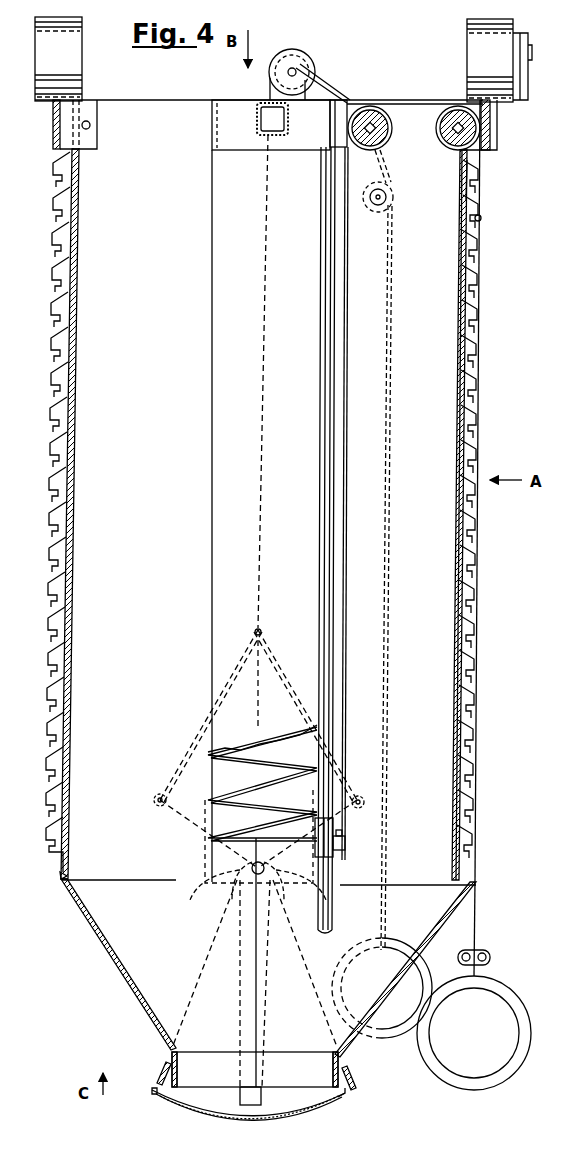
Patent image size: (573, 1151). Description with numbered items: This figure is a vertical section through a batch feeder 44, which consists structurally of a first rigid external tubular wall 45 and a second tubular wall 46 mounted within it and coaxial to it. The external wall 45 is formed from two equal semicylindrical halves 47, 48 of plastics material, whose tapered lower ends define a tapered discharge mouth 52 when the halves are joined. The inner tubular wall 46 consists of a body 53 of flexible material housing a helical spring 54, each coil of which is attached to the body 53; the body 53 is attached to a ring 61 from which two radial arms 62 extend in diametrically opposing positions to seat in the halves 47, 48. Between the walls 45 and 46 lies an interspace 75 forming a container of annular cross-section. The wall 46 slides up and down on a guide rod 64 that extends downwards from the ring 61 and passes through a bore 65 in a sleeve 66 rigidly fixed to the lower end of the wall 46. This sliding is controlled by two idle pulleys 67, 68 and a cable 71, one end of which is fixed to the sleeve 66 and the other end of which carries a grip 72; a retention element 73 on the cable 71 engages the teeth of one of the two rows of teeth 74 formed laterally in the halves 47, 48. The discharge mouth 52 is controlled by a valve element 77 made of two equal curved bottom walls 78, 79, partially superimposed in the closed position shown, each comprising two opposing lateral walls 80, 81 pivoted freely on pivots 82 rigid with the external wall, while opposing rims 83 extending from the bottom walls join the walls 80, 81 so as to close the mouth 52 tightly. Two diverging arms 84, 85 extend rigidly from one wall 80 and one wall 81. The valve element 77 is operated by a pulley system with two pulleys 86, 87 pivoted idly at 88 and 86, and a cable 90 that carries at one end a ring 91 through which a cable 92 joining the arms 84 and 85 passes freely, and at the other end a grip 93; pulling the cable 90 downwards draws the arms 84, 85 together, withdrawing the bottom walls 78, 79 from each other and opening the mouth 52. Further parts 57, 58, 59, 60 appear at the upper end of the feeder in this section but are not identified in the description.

The batch feeder 44 is at (490, 318).
The first rigid external tubular wall 45 is at (464, 624).
The second tubular wall 46 is at (210, 612).
The semicylindrical half 47 is at (455, 706).
The semicylindrical half 48 is at (70, 650).
The tapered discharge mouth 52 is at (286, 1074).
The body of flexible material 53 is at (212, 553).
The helical spring 54 is at (222, 774).
The cylinder 57 is at (80, 61).
The mounting block 58 is at (53, 128).
The pin hole 59 is at (90, 126).
The tube 60 is at (84, 148).
The ring 61 is at (238, 151).
The radial arms 62 is at (288, 125).
The guide rod 64 is at (329, 580).
The bore 65 is at (331, 860).
The sleeve 66 is at (333, 855).
The pulley 67 is at (376, 149).
The pulley 68 is at (441, 150).
The cable 71 is at (345, 679).
The grip 72 is at (511, 1003).
The retention element 73 is at (481, 220).
The rows of teeth 74 is at (42, 331).
The interspace 75 is at (78, 788).
The valve element 77 is at (176, 1110).
The curved bottom wall 78 is at (207, 1113).
The curved bottom wall 79 is at (342, 1099).
The lateral wall 80 is at (198, 970).
The lateral wall 81 is at (312, 980).
The pivots 82 is at (264, 870).
The rims 83 is at (158, 1074).
The diverging arm 84 is at (358, 809).
The diverging arm 85 is at (172, 818).
The pulley 86 is at (300, 72).
The pulley 87 is at (384, 214).
The pivot 88 is at (298, 62).
The cable 90 is at (265, 460).
The ring 91 is at (261, 633).
The cable 92 is at (192, 743).
The grip 93 is at (398, 1040).